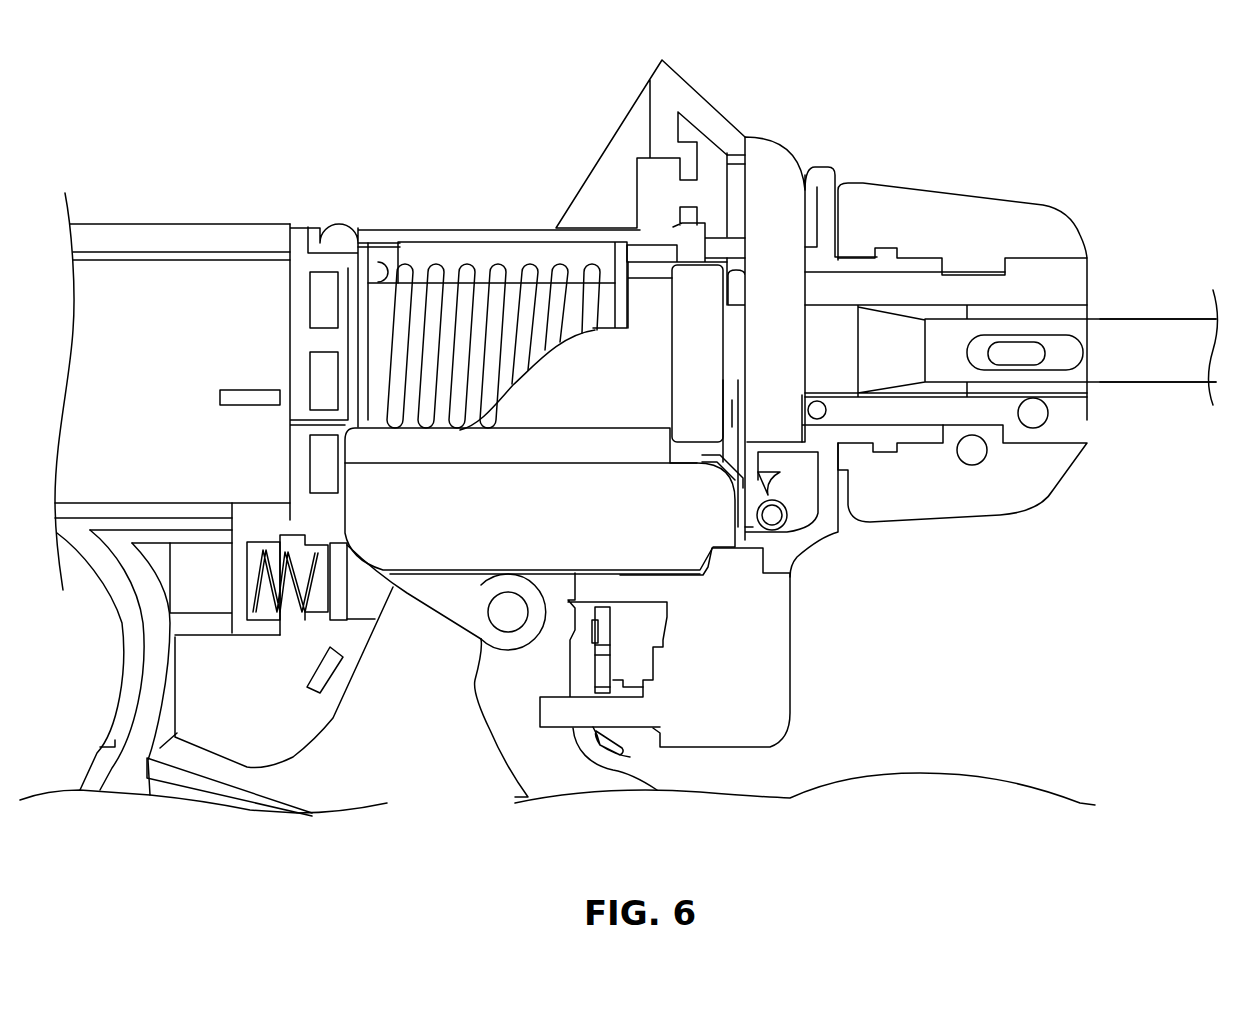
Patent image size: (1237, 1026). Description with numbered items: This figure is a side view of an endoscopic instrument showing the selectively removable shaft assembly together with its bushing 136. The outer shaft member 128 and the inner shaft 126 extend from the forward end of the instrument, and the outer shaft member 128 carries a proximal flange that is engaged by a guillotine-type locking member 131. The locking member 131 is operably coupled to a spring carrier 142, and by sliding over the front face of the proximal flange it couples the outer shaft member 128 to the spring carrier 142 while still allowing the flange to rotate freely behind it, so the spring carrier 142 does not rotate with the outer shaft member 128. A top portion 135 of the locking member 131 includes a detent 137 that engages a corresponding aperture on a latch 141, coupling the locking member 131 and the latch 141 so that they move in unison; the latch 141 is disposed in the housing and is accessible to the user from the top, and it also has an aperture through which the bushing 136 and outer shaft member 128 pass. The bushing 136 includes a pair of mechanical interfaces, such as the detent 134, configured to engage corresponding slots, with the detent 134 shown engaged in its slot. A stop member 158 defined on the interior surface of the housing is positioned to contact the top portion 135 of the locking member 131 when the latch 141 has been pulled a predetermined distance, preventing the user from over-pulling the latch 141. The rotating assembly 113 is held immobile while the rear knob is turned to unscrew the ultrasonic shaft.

The rotating assembly 113 is at (970, 238).
The inner shaft 126 is at (1072, 352).
The outer shaft member 128 is at (1125, 370).
The locking member 131 is at (710, 216).
The detent 134 is at (1020, 352).
The top portion 135 is at (687, 245).
The bushing 136 is at (1060, 427).
The detent 137 is at (732, 250).
The latch 141 is at (790, 272).
The spring carrier 142 is at (382, 300).
The stop member 158 is at (687, 167).